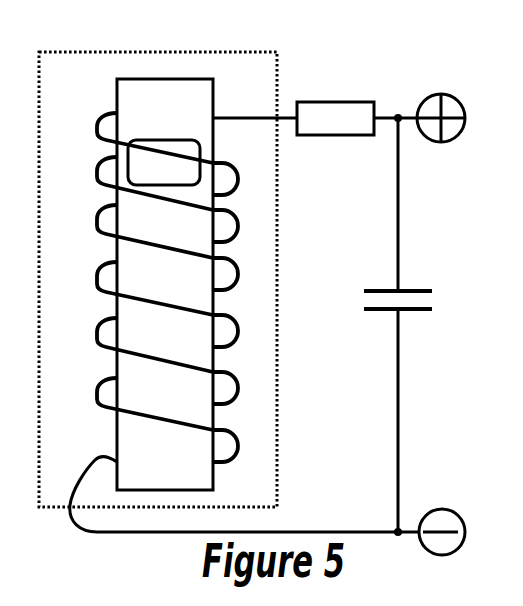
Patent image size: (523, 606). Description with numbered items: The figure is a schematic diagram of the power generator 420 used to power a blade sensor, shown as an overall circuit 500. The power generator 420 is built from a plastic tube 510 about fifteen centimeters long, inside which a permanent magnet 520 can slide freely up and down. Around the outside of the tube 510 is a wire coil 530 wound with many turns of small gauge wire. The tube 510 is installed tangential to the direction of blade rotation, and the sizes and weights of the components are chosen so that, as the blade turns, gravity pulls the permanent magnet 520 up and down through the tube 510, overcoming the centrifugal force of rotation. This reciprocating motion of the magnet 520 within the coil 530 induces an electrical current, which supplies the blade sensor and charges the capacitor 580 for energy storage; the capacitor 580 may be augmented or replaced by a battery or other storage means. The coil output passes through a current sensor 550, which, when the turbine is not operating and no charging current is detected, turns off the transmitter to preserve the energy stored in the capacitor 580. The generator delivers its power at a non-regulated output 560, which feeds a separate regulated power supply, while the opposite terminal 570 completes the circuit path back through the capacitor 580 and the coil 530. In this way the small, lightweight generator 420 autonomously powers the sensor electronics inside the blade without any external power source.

The charging circuit system 500 is at (413, 63).
The power generator 420 is at (277, 78).
The plastic tube 510 is at (112, 436).
The permanent magnet 520 is at (157, 166).
The wire coil 530 is at (92, 227).
The current sensor 550 is at (353, 130).
The non-regulated output 560 is at (427, 143).
The negative terminal 570 is at (440, 509).
The capacitor 580 is at (422, 290).